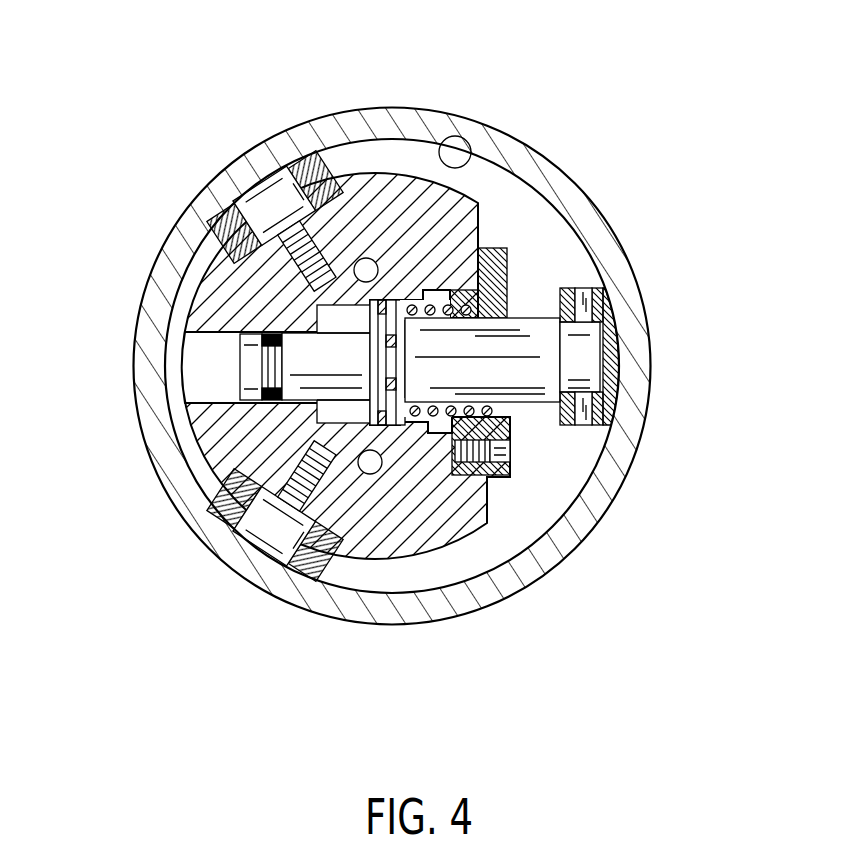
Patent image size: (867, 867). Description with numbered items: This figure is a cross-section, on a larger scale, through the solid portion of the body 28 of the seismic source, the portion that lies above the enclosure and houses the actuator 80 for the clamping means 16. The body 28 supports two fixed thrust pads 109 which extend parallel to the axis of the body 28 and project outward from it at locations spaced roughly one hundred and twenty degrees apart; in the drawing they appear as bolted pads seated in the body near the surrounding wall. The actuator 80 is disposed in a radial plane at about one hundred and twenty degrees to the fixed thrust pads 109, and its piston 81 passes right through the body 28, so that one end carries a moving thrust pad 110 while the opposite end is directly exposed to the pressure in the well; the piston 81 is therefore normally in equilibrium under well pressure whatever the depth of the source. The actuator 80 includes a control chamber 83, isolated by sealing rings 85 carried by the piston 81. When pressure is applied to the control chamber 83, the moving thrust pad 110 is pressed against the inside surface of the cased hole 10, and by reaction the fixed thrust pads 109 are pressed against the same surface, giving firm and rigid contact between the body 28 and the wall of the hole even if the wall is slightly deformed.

The cased hole 10 is at (452, 140).
The clamping means 16 is at (566, 450).
The body 28 is at (398, 205).
The actuator 80 is at (360, 432).
The piston 81 is at (248, 353).
The control chamber 83 is at (348, 313).
The sealing rings 85 is at (375, 292).
The fixed thrust pads 109 is at (222, 208).
The moving thrust pad 110 is at (614, 320).